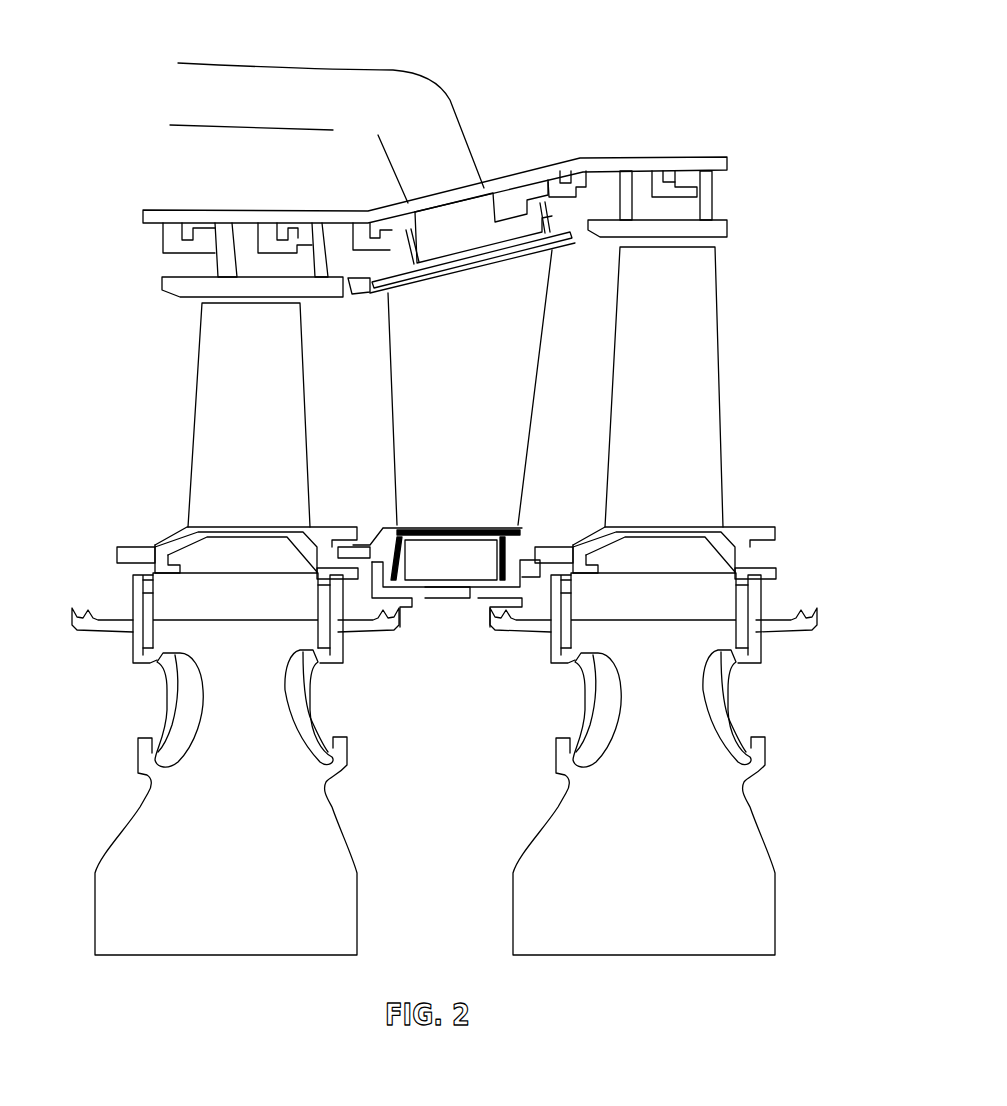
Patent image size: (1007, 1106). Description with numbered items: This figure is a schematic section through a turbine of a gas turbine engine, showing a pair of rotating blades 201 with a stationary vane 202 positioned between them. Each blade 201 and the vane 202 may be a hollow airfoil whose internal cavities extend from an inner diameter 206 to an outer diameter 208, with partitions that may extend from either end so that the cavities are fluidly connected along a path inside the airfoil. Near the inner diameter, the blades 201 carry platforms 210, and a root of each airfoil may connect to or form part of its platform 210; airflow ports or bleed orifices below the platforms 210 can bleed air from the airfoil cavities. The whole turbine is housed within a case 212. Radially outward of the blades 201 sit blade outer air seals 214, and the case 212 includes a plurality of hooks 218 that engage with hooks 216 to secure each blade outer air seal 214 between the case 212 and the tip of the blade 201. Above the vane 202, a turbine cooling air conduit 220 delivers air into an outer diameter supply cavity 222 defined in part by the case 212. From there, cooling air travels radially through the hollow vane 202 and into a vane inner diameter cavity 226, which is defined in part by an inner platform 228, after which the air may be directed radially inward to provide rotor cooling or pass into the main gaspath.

The blade 201 is at (282, 358).
The vane 202 is at (515, 340).
The inner diameter 206 is at (493, 601).
The outer diameter 208 is at (433, 201).
The platform 210 is at (545, 528).
The case 212 is at (446, 197).
The blade outer air seal 214 is at (237, 285).
The hook 216 is at (220, 230).
The hook 218 is at (298, 248).
The turbine cooling air conduit 220 is at (257, 60).
The outer diameter supply cavity 222 is at (475, 220).
The vane inner diameter cavity 226 is at (450, 575).
The inner platform 228 is at (446, 563).